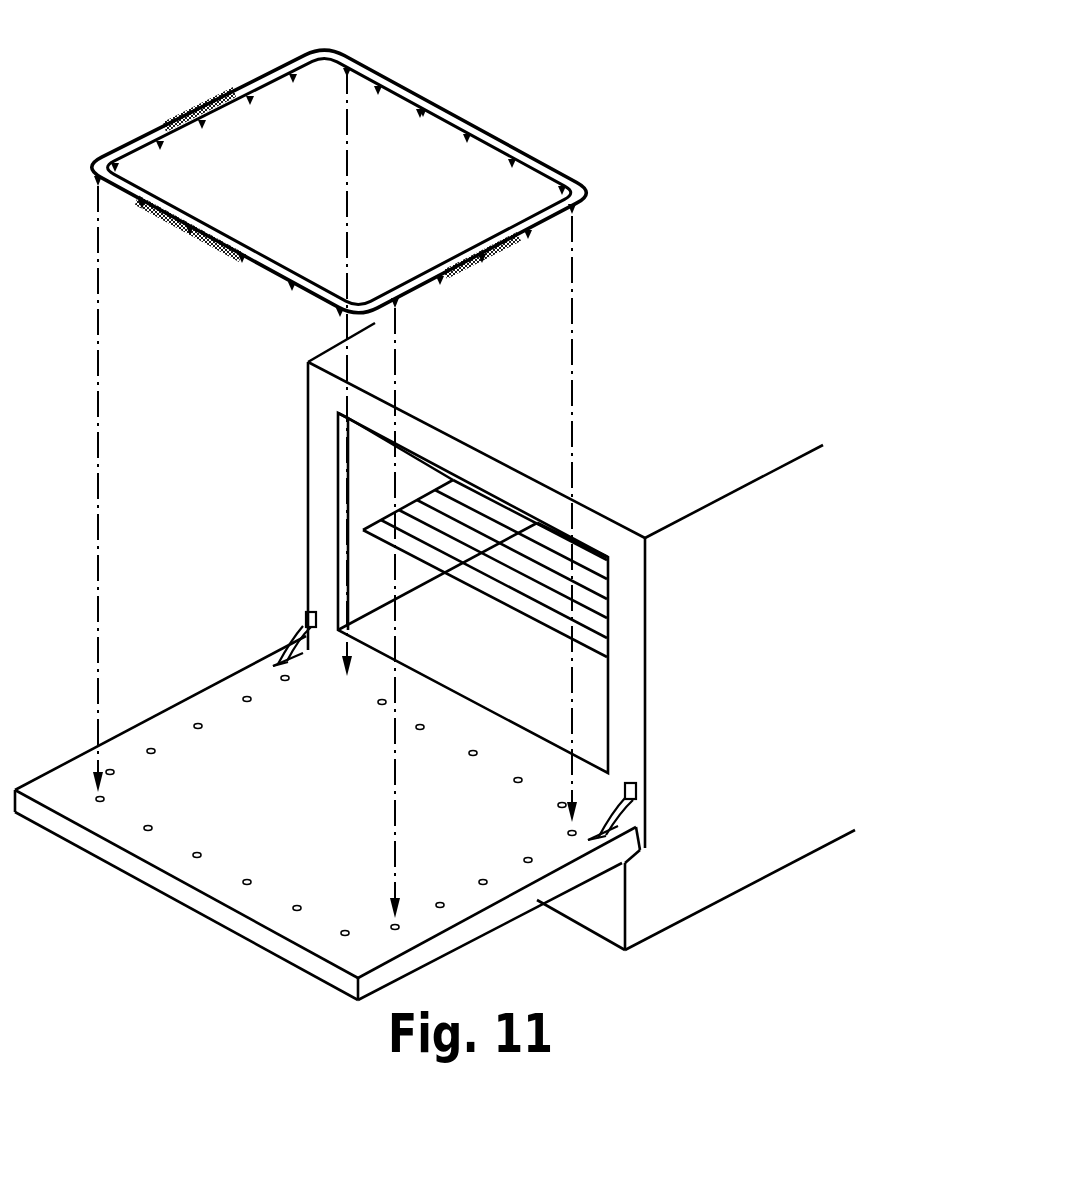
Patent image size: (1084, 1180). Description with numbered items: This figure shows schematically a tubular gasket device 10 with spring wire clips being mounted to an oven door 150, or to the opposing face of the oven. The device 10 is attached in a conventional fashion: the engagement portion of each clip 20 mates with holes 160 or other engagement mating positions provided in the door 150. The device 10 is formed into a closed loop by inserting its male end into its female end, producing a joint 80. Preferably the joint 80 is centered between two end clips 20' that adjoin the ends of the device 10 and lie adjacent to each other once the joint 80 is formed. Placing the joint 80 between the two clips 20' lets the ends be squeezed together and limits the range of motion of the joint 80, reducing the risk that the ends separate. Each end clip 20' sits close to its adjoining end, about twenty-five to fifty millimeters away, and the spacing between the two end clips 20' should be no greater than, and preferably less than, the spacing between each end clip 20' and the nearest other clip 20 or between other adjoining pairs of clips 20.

The device 10 is at (220, 90).
The clip 20 is at (335, 192).
The end clip 20' is at (412, 177).
The joint 80 is at (450, 120).
The oven door 150 is at (252, 945).
The holes 160 is at (283, 676).